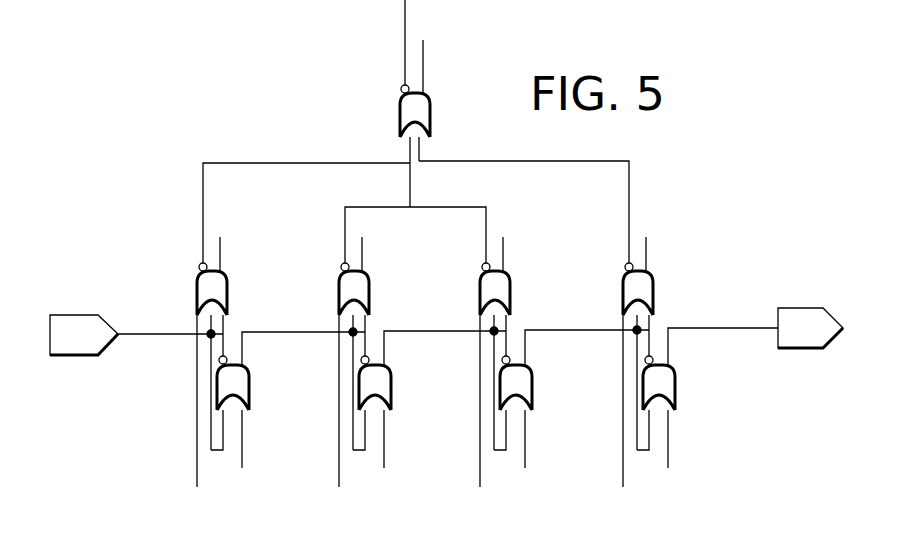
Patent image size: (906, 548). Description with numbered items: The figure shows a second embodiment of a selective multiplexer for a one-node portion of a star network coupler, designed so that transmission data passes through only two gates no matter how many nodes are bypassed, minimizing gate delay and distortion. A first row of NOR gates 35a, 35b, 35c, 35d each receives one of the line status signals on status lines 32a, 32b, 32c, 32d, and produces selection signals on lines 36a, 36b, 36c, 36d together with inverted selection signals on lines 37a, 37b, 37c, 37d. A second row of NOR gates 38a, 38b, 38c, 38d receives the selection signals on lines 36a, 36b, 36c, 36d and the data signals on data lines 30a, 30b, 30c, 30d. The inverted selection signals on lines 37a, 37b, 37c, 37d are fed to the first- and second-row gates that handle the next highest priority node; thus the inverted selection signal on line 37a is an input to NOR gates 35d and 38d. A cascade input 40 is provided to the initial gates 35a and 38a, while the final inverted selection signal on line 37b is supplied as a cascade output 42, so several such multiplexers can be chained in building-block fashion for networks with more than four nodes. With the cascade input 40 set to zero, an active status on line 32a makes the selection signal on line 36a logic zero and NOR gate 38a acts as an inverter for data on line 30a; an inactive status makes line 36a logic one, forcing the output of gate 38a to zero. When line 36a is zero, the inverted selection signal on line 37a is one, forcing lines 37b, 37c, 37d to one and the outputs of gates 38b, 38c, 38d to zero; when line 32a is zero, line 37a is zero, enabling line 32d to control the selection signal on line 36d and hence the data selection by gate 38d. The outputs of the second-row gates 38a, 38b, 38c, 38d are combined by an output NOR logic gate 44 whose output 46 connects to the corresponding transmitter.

The data line 30a is at (197, 467).
The data line 30b is at (624, 461).
The data line 30c is at (481, 466).
The data line 30d is at (340, 467).
The status line 32a is at (243, 437).
The status line 32b is at (669, 437).
The status line 32c is at (526, 437).
The status line 32d is at (385, 437).
The NOR gate 35a is at (250, 383).
The NOR gate 35b is at (676, 383).
The NOR gate 35c is at (533, 383).
The NOR gate 35d is at (392, 383).
The selection signal line 36a is at (226, 326).
The selection signal line 36b is at (650, 325).
The selection signal line 36c is at (513, 298).
The selection signal line 36d is at (370, 328).
The inverted selection signal line 37a is at (328, 334).
The inverted selection signal line 37b is at (757, 329).
The inverted selection signal line 37c is at (553, 331).
The inverted selection signal line 37d is at (403, 332).
The NOR gate 38a is at (195, 298).
The NOR gate 38b is at (620, 292).
The NOR gate 38c is at (479, 292).
The NOR gate 38d is at (338, 275).
The cascade input 40 is at (79, 314).
The cascade output 42 is at (786, 306).
The output NOR logic gate 44 is at (431, 118).
The output 46 is at (404, 50).